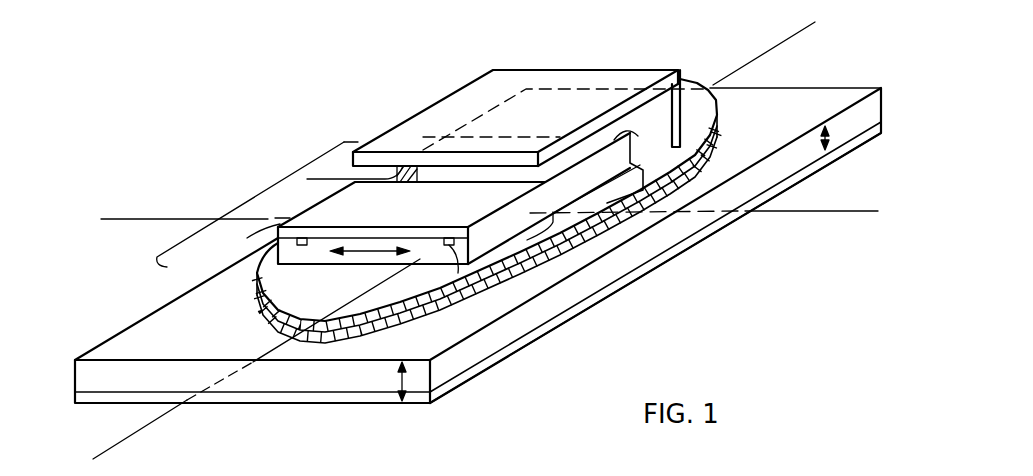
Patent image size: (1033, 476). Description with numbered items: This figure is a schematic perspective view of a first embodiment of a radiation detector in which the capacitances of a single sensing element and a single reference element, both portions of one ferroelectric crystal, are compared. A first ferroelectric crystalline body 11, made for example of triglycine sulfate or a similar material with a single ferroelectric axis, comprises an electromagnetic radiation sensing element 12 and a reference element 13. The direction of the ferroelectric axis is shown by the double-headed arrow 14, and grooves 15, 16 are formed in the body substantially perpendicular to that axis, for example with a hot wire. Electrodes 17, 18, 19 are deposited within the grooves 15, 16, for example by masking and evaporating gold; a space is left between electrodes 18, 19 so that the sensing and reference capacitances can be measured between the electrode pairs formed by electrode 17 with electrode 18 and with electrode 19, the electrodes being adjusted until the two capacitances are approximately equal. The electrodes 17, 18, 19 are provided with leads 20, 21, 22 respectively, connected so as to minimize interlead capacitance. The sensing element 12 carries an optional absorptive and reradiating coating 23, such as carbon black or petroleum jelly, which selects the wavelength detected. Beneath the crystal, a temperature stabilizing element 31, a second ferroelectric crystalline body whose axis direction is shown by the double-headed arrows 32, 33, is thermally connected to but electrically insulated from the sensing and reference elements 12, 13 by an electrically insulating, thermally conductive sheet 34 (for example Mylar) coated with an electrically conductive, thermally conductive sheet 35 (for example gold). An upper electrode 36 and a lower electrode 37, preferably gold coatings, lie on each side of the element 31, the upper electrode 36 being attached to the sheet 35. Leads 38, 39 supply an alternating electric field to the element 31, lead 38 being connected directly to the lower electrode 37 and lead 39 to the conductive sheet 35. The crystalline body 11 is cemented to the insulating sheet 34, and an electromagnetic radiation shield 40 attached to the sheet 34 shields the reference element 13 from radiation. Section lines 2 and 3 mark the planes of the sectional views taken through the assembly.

The section line 2- 2 is at (104, 455).
The section line 3- 3 is at (101, 219).
The first ferroelectric crystalline body 11 is at (254, 193).
The electromagnetic radiation sensing element 12 is at (522, 240).
The reference element 13 is at (553, 213).
The double-headed arrow 14 is at (363, 253).
The groove 15 is at (302, 237).
The groove 16 is at (448, 245).
The electrode 17 is at (413, 165).
The electrode 18 is at (448, 238).
The electrode 19 is at (572, 163).
The lead 20 is at (332, 172).
The lead 21 is at (437, 316).
The lead 22 is at (653, 165).
The electromagnetic radiation absorptive and reradiating coating 23 is at (250, 239).
The temperature stabilizing element 31 is at (75, 382).
The double-headed arrow 32 is at (404, 401).
The double-headed arrow 33 is at (830, 138).
The electrically insulating, thermally conductive sheet 34 is at (719, 113).
The electrically conductive, thermally conductive sheet 35 is at (719, 126).
The upper electrode 36 is at (705, 160).
The lower electrode 37 is at (565, 322).
The lead 38 is at (527, 338).
The lead 39 is at (560, 250).
The electromagnetic radiation shield 40 is at (587, 80).